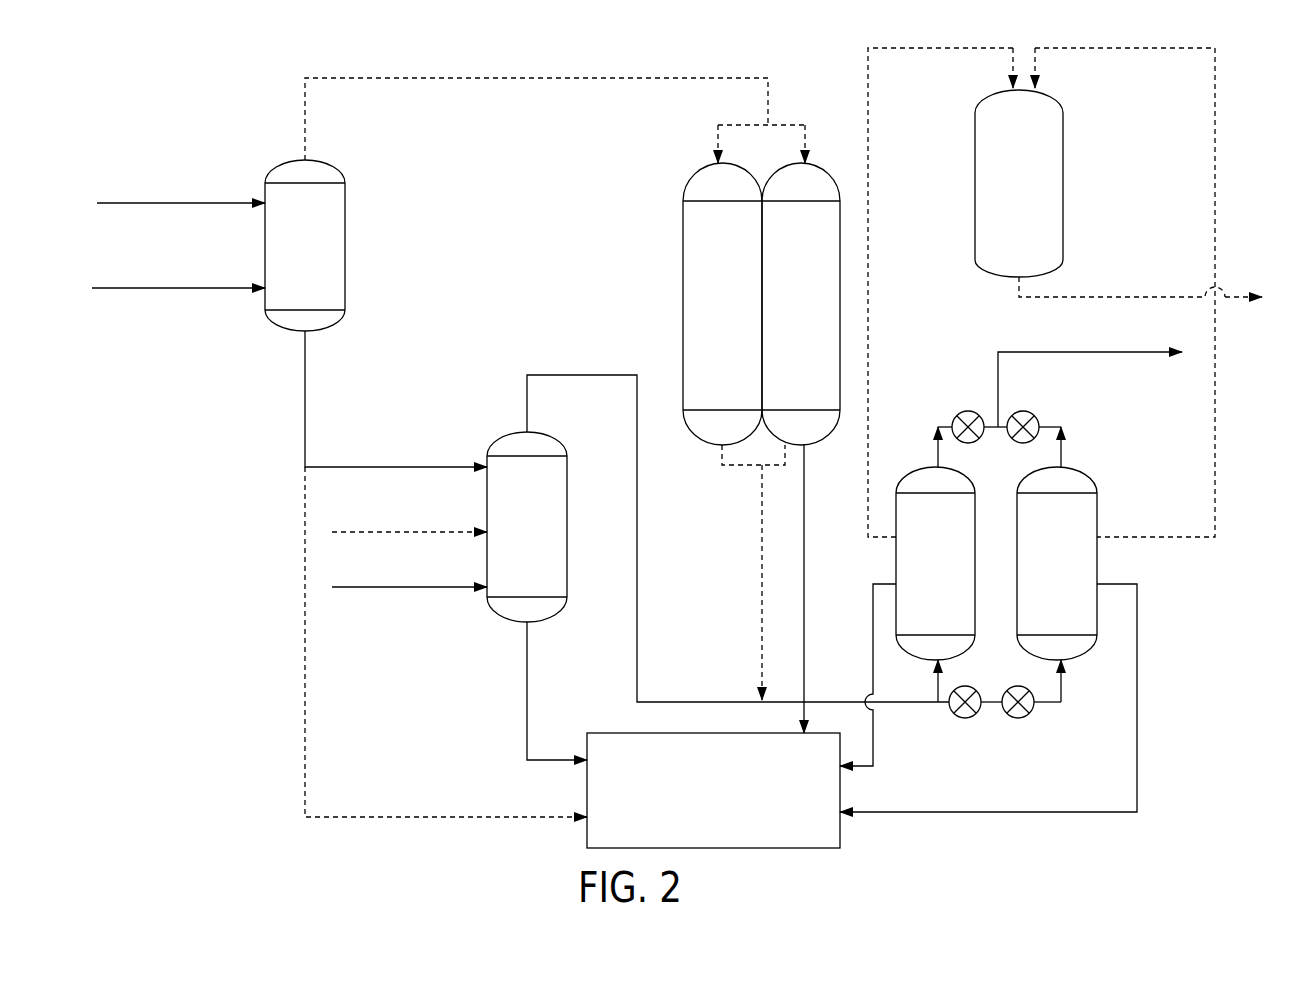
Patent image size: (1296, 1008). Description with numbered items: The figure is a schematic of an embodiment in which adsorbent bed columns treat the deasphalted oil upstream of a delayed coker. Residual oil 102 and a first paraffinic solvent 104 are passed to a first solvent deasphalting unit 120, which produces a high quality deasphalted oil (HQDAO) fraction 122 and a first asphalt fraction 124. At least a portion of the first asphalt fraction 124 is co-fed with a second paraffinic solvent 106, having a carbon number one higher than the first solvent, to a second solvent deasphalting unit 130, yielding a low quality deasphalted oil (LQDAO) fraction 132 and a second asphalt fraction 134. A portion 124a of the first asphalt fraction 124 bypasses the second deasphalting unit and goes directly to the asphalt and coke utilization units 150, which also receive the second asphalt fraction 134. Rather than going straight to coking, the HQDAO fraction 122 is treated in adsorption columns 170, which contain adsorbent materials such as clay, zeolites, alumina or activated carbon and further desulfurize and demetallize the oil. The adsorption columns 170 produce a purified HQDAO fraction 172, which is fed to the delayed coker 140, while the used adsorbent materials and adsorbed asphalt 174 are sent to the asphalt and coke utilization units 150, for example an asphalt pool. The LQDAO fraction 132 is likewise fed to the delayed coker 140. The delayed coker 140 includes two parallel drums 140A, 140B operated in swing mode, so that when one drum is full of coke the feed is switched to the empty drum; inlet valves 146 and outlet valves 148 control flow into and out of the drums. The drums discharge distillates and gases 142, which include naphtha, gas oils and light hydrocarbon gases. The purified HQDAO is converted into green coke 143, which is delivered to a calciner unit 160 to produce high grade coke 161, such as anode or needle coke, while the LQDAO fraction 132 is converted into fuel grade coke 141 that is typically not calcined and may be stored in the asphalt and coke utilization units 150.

The residual oil 102 is at (126, 203).
The first paraffinic solvent 104 is at (126, 288).
The second paraffinic solvent 106 is at (380, 587).
The first solvent deasphalting unit 120 is at (319, 254).
The high quality deasphalted oil (HQDAO) fraction 122 is at (511, 78).
The first asphalt fraction 124 is at (307, 386).
The portion of the first asphalt fraction 124a is at (307, 555).
The second solvent deasphalting unit 130 is at (541, 534).
The low quality deasphalted oil (LQDAO) fraction 132 is at (586, 375).
The second asphalt fraction 134 is at (529, 672).
The delayed coker 140 is at (1047, 563).
The first coke drum 140A is at (956, 576).
The second coke drum 140B is at (1077, 576).
The fuel grade coke 141 is at (873, 628).
The distillates and gases 142 is at (1013, 352).
The green coke 143 is at (868, 80).
The inlet valves 146 is at (1018, 722).
The outlet valves 148 is at (968, 412).
The asphalt and coke utilization units 150 is at (726, 798).
The calciner unit 160 is at (1033, 194).
The high grade coke 161 is at (1146, 297).
The adsorption columns 170 is at (736, 304).
The purified HQDAO fraction 172 is at (762, 553).
The used adsorbent materials and adsorbed asphalt 174 is at (804, 548).